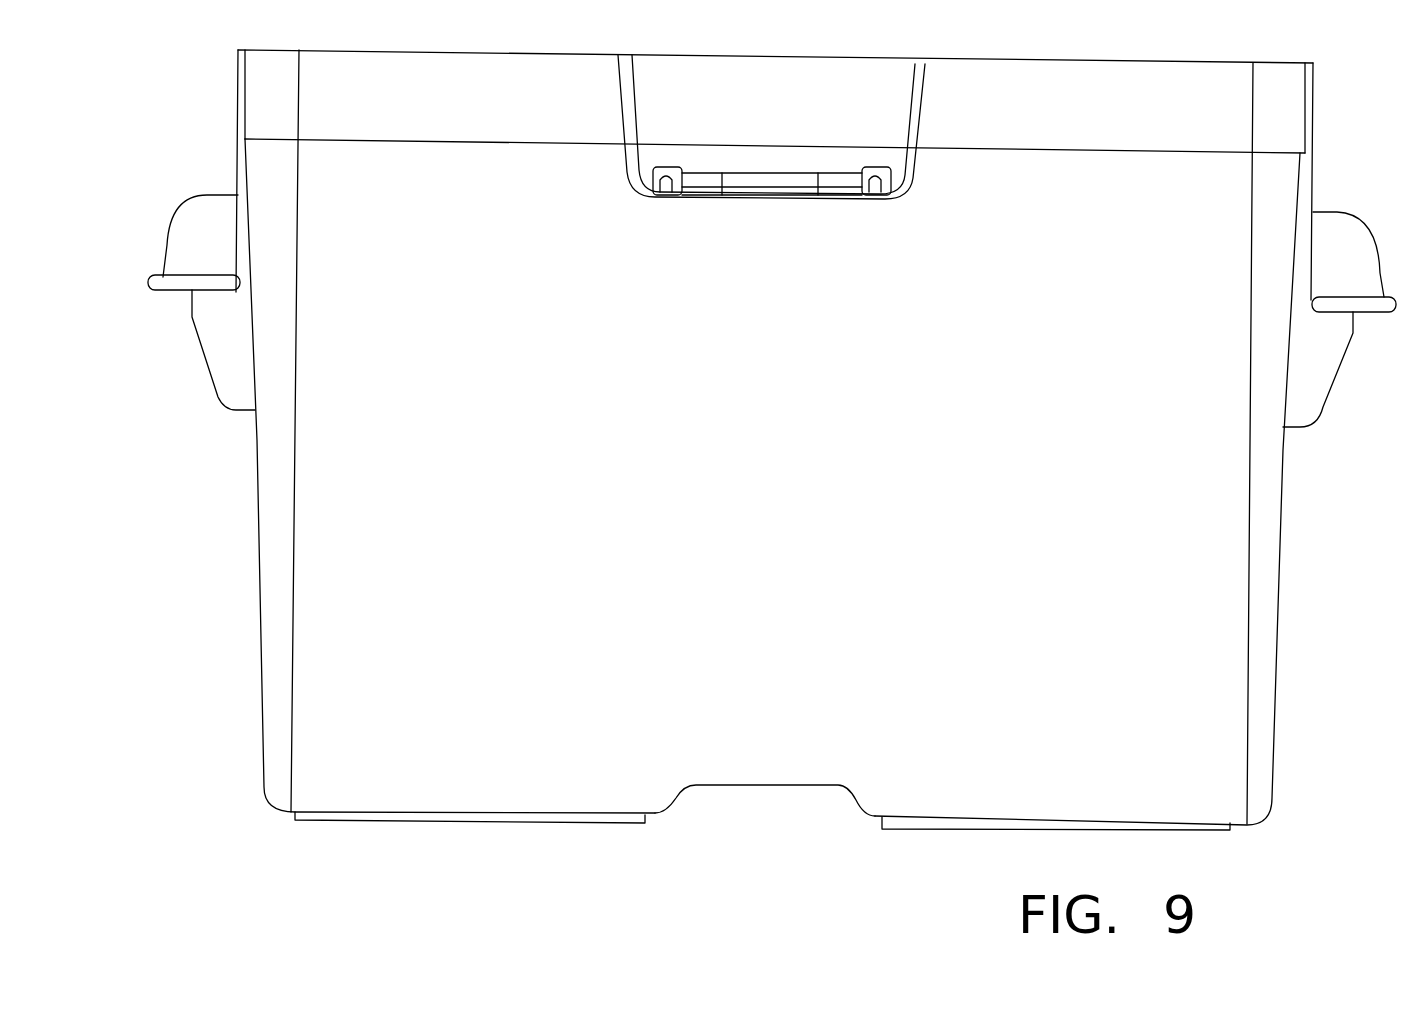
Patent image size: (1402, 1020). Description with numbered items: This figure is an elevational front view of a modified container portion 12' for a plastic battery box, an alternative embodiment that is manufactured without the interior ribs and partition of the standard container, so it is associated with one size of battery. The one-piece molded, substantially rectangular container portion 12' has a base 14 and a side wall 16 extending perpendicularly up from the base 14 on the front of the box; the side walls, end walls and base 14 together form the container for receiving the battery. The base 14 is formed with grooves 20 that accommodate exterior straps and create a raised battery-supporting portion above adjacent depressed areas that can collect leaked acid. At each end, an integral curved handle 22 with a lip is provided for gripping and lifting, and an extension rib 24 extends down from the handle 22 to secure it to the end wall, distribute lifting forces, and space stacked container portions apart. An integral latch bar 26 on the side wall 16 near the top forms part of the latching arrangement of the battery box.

The container portion 12' is at (742, 335).
The base 14 is at (330, 822).
The side wall 16 is at (793, 537).
The groove 20 is at (748, 786).
The handle 22 is at (167, 253).
The extension rib 24 is at (218, 343).
The latch bar 26 is at (705, 190).